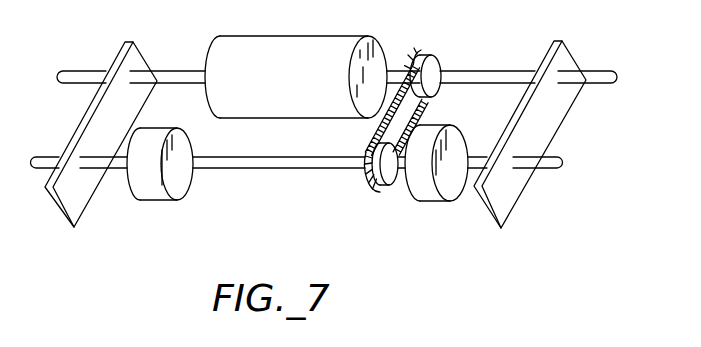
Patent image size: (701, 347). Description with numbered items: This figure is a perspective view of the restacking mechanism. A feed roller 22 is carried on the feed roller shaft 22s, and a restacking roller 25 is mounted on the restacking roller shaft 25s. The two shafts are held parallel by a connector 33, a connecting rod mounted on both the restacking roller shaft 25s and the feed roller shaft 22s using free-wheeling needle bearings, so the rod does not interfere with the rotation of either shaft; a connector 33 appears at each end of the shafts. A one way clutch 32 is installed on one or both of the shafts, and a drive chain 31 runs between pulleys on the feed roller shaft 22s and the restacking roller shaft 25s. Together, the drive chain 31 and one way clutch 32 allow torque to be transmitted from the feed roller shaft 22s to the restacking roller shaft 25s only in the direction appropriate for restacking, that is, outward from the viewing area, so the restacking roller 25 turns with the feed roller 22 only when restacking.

The feed roller 22 is at (282, 36).
The feed roller shaft 22s is at (589, 70).
The restacking roller 25 is at (150, 190).
The restacking roller shaft 25s is at (317, 168).
The drive chain 31 is at (426, 122).
The one way clutch 32 is at (389, 188).
The connector 33 is at (80, 124).